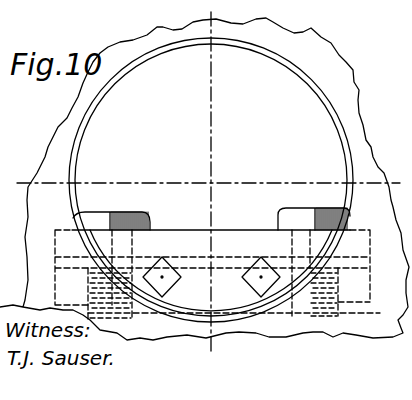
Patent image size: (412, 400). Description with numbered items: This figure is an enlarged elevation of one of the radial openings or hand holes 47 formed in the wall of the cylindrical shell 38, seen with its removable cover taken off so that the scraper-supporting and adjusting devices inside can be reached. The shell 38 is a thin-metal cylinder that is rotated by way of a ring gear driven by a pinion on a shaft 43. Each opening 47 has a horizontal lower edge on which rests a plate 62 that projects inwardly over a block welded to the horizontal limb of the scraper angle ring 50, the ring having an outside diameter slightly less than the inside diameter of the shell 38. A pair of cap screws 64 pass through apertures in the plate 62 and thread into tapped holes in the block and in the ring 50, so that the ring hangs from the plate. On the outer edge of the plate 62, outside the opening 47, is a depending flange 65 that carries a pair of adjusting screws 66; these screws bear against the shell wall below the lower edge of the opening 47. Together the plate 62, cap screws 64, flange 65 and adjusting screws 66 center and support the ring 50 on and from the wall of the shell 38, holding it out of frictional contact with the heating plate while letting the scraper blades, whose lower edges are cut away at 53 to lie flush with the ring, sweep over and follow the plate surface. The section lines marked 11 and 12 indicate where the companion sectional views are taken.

The cylindrical shell 38 is at (333, 72).
The radial opening or hand hole 47 is at (211, 180).
The depending flange 65 is at (197, 292).
The plate 62 is at (235, 230).
The cap screws 64 is at (128, 211).
The adjusting screws 66 is at (167, 265).
The section line 11- 11 is at (17, 163).
The section line 12- 12 is at (211, 357).
The cut away portion 53 is at (75, 1).
The angle ring 50 is at (152, 1).
The shaft 43 is at (403, 60).